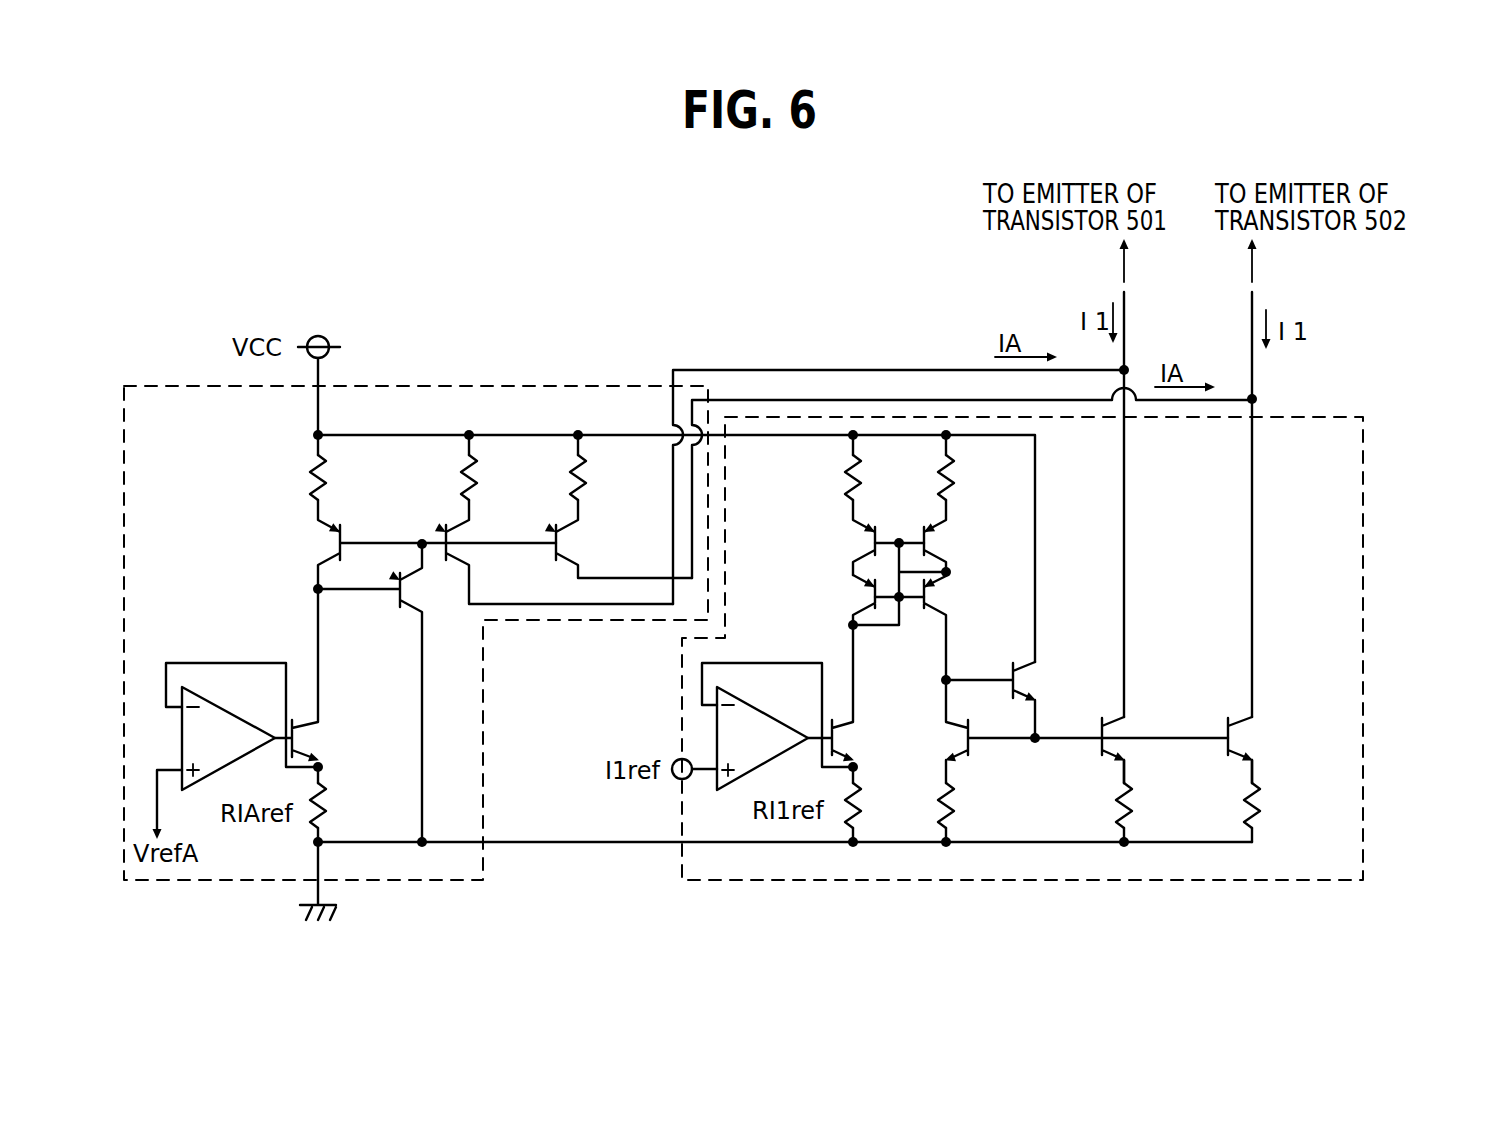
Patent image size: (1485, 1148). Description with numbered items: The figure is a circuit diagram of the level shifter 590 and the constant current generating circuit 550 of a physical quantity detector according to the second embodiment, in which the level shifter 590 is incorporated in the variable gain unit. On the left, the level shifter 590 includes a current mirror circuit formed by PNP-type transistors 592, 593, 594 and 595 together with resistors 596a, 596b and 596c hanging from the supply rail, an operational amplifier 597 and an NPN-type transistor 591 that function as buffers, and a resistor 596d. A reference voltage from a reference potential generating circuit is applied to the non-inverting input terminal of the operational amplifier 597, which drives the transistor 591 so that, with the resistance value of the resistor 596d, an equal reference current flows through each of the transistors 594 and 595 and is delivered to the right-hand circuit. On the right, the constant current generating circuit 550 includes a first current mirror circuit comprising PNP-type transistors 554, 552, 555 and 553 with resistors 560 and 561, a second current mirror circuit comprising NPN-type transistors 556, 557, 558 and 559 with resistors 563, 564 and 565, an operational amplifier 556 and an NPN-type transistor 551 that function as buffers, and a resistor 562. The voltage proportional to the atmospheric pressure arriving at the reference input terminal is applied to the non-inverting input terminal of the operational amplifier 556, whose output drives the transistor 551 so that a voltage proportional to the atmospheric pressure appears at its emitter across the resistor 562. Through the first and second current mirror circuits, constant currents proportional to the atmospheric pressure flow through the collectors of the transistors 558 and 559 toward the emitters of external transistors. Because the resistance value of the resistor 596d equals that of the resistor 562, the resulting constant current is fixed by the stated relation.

The constant current generating circuit 550 is at (1363, 520).
The NPN-type transistor 551 is at (850, 730).
The PNP-type transistor 552 is at (866, 590).
The PNP-type transistor 553 is at (934, 594).
The PNP-type transistor 554 is at (866, 535).
The PNP-type transistor 555 is at (930, 535).
The operational amplifier 556 is at (735, 700).
The NPN-type transistor 557 is at (958, 740).
The NPN-type transistor 558 is at (1120, 724).
The NPN-type transistor 559 is at (1245, 725).
The resistor 560 is at (848, 470).
The resistor 561 is at (957, 472).
The resistor 562 is at (862, 792).
The resistor 563 is at (955, 792).
The resistor 564 is at (1135, 790).
The resistor 565 is at (1264, 790).
The level shifter 590 is at (586, 386).
The NPN-type transistor 591 is at (312, 735).
The PNP-type transistor 592 is at (428, 585).
The PNP-type transistor 593 is at (330, 536).
The PNP-type transistor 594 is at (455, 530).
The PNP-type transistor 595 is at (565, 530).
The resistor 596a is at (312, 475).
The resistor 596b is at (480, 472).
The resistor 596c is at (589, 472).
The resistor 596d is at (328, 792).
The operational amplifier 597 is at (200, 698).